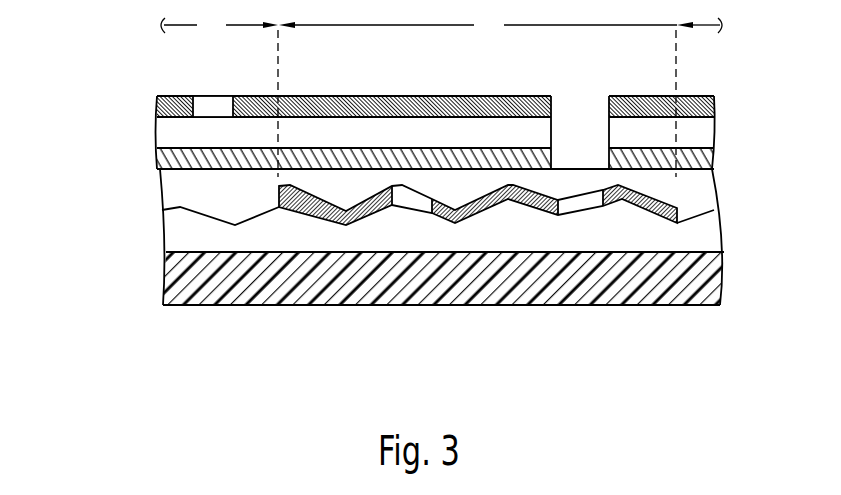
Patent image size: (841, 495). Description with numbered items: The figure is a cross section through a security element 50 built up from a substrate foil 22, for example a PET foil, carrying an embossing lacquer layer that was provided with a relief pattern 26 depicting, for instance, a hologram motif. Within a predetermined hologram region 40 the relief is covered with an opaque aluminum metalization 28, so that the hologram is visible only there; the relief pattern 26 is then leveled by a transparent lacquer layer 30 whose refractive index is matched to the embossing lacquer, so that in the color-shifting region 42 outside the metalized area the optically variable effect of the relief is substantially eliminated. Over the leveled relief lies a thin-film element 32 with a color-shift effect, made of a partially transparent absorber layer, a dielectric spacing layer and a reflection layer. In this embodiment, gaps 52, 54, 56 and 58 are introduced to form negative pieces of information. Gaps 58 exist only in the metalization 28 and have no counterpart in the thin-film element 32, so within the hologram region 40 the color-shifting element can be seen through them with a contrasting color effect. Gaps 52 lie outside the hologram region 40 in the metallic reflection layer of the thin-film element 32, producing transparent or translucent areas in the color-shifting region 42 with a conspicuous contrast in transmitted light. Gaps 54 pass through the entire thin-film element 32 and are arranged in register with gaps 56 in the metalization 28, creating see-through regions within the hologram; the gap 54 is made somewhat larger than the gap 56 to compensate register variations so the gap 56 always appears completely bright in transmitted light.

The security element 50 is at (97, 92).
The color-shifting region 42 is at (219, 95).
The hologram region 40 is at (500, 95).
The gaps in the reflection layer of the thin-film element 52 is at (213, 100).
The gaps of the thin-film element 54 is at (582, 100).
The thin-film element 32 is at (731, 97).
The transparent lacquer layer 30 is at (172, 192).
The relief pattern 26 is at (707, 235).
The substrate foil 22 is at (705, 278).
The metalization 28 is at (658, 220).
The gaps in the metalization 58 is at (417, 205).
The gaps in the metalization in register with thin-film gaps 56 is at (581, 210).